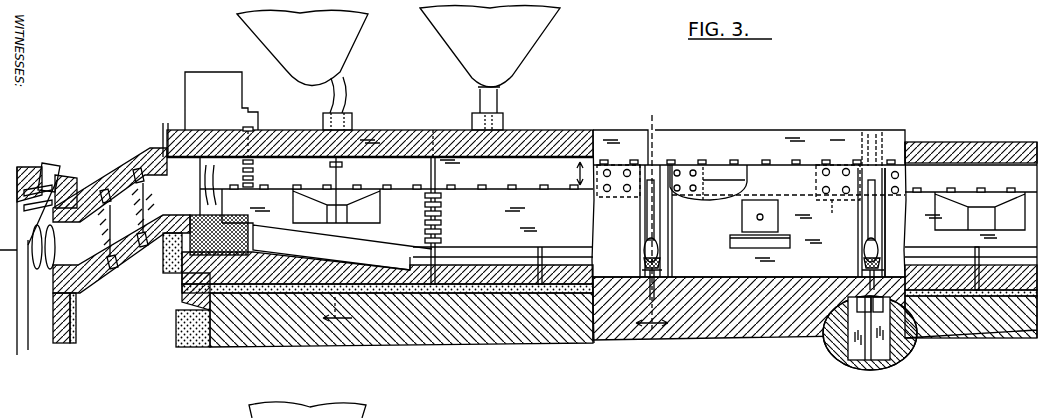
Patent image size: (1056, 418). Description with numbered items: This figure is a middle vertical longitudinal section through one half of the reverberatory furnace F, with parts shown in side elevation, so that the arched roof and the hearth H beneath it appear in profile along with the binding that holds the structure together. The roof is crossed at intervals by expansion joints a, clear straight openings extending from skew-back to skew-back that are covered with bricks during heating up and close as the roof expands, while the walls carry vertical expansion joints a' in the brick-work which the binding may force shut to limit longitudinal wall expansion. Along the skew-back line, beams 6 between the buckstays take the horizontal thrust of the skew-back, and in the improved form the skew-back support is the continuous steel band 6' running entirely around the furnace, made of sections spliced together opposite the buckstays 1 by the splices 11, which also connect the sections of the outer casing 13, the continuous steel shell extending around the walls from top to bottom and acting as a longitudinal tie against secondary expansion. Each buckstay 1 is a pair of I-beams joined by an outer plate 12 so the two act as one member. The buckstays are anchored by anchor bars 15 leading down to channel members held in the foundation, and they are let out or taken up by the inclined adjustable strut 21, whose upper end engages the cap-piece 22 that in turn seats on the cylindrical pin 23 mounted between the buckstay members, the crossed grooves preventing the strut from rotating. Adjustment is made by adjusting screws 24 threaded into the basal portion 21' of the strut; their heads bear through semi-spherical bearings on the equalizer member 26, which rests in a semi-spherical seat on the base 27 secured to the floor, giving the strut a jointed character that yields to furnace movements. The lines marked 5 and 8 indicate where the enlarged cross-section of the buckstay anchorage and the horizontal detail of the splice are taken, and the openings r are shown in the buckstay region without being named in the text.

The buckstay 1 is at (660, 195).
The section line 5- 5 is at (652, 227).
The skew-back beam 6 is at (344, 210).
The skew-back support band 6' is at (743, 218).
The section line 8- 8 is at (580, 174).
The splice 11 is at (700, 170).
The outer plate 12 is at (660, 172).
The outer casing 13 is at (808, 210).
The anchor bar 15 is at (866, 352).
The adjustable strut 21 is at (756, 215).
The basal portion of strut 21' is at (761, 257).
The cap-piece 22 is at (648, 190).
The cylindrical pin 23 is at (640, 192).
The adjusting screw 24 is at (656, 254).
The equalizer member 26 is at (662, 270).
The base 27 is at (653, 290).
The roof expansion joint a is at (663, 189).
The wall expansion joint a' is at (446, 218).
The reverberatory furnace F is at (522, 173).
The hearth H is at (487, 265).
The openings r is at (828, 170).